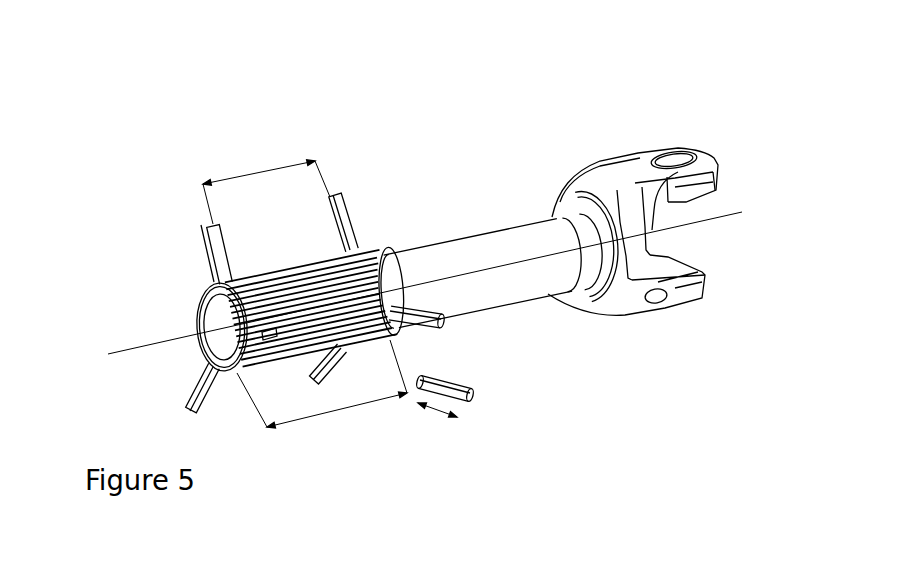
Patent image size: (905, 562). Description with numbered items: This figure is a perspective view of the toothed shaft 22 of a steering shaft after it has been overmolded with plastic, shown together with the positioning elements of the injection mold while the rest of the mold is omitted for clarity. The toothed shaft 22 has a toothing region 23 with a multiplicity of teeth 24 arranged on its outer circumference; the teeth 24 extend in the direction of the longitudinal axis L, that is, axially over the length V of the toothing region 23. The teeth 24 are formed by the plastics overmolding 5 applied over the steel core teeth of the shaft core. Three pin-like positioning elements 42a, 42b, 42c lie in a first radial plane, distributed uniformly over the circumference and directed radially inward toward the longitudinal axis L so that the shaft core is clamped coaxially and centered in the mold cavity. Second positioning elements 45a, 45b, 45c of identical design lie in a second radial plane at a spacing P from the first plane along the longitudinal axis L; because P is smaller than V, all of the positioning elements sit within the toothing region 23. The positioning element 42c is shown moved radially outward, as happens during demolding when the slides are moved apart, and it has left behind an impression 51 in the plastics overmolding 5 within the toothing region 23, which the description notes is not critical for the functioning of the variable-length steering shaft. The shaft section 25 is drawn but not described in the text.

The toothed shaft 22 is at (488, 177).
The toothing region 23 is at (363, 250).
The shaft 25 is at (408, 266).
The plastics overmolding 5 is at (393, 323).
The teeth 24 is at (228, 330).
The positioning element 42a is at (188, 403).
The positioning element 42b is at (203, 238).
The positioning element 42c is at (475, 397).
The second positioning element 45a is at (337, 367).
The second positioning element 45b is at (340, 197).
The second positioning element 45c is at (443, 317).
The impression 51 is at (280, 362).
The spacing P is at (253, 172).
The length of the toothing region V is at (347, 407).
The longitudinal axis L is at (742, 212).